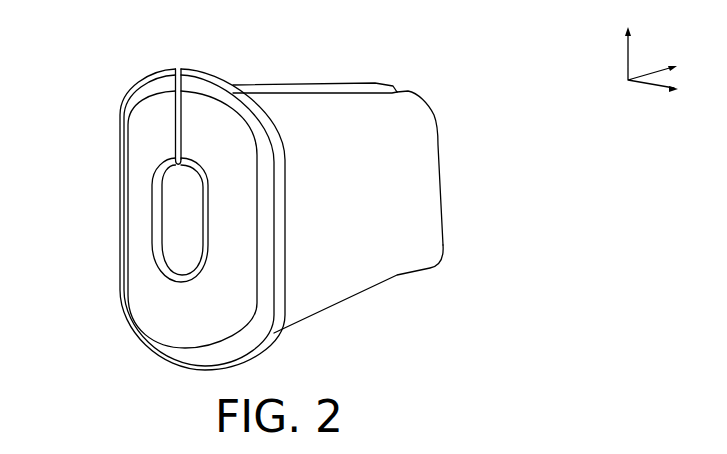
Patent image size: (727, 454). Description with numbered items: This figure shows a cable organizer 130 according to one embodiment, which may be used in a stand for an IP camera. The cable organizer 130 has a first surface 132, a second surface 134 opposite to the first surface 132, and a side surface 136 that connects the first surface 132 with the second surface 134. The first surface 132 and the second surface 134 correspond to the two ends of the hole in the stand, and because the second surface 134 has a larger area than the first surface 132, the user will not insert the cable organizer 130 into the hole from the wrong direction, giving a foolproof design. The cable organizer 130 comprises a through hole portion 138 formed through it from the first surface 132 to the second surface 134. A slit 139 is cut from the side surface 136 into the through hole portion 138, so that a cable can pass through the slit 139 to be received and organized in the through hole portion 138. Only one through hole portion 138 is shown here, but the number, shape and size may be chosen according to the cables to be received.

The cable organizer 130 is at (97, 46).
The first surface 132 is at (428, 107).
The second surface 134 is at (174, 312).
The side surface 136 is at (348, 275).
The through hole portion 138 is at (175, 183).
The slit 139 is at (190, 56).